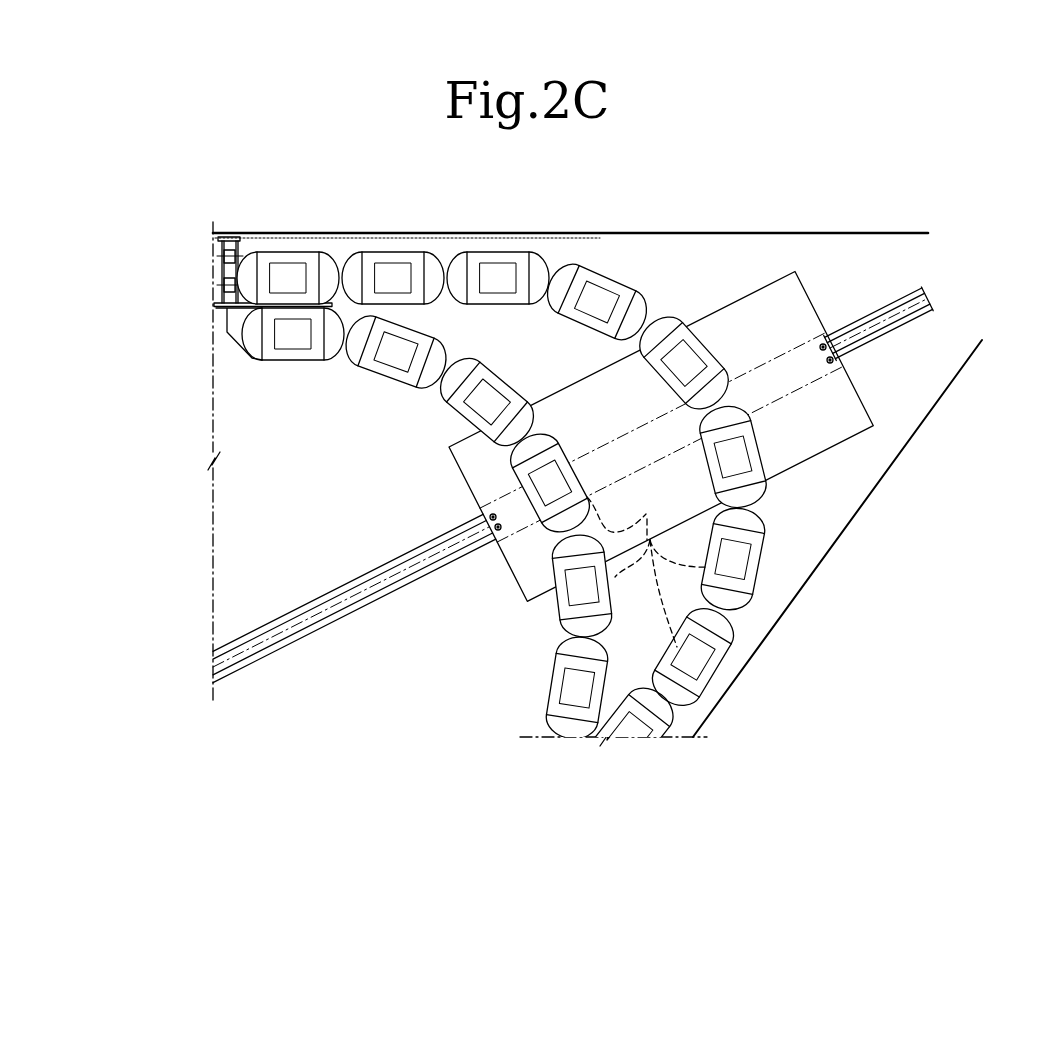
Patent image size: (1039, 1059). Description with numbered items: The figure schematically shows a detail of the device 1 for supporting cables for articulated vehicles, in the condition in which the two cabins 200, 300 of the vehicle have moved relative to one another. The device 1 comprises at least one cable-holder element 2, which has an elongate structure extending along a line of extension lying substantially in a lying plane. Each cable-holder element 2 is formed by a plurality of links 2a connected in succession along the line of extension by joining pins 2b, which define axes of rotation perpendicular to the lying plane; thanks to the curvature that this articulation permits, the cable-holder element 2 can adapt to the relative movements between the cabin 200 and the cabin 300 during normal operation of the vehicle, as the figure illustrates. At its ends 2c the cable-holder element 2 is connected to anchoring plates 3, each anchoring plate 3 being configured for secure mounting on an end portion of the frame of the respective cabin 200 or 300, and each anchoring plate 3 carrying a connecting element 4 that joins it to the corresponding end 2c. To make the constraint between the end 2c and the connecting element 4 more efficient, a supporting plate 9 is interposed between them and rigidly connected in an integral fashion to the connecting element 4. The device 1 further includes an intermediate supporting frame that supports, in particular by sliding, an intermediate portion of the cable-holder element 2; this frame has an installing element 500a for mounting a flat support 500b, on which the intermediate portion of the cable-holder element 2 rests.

The device for supporting cables 1 is at (187, 345).
The cable-holder element 2 is at (436, 430).
The links 2a is at (647, 564).
The joining pins 2b is at (577, 620).
The ends 2c is at (246, 262).
The anchoring plates 3 is at (228, 238).
The connecting element 4 is at (212, 263).
The supporting plate 9 is at (217, 297).
The cabin 200 is at (842, 232).
The cabin 300 is at (940, 403).
The installing element 500a is at (930, 290).
The flat support 500b is at (797, 313).